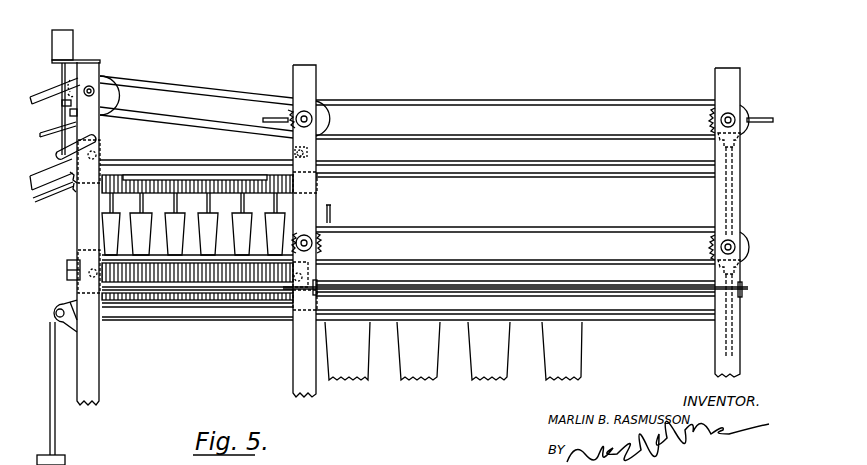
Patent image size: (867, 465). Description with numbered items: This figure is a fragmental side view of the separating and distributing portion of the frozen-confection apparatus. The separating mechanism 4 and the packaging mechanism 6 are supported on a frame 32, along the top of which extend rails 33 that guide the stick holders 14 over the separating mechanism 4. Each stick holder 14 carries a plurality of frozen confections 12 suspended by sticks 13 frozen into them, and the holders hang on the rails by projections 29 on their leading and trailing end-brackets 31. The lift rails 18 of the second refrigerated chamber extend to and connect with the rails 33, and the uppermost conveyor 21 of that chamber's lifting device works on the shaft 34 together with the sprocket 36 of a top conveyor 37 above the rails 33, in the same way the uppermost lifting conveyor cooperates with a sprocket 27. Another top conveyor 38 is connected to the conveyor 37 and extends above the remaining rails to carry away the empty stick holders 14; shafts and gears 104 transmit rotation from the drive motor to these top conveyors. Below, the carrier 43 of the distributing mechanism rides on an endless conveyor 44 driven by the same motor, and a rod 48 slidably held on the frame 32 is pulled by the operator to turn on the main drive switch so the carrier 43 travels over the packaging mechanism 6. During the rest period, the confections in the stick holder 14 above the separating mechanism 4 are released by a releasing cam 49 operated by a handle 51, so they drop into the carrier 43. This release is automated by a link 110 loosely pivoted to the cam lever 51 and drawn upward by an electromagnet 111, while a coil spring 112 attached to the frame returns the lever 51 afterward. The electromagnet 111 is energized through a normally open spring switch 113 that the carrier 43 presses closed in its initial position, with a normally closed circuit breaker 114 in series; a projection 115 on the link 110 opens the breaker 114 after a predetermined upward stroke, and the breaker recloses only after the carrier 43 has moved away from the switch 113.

The separating mechanism 4 is at (237, 81).
The packaging mechanism 6 is at (583, 92).
The frozen confections 12 is at (143, 253).
The sticks 13 is at (173, 203).
The stick holders 14 is at (186, 188).
The lift rails 18 is at (48, 176).
The uppermost conveyor 21 is at (46, 98).
The sprocket 27 is at (66, 84).
The projections 29 is at (308, 152).
The end-brackets 31 is at (290, 158).
The frame 32 is at (95, 378).
The rails 33 is at (484, 174).
The shaft 34 is at (90, 85).
The sprocket 36 is at (284, 112).
The top conveyor 37 is at (172, 82).
The top conveyor 38 is at (472, 100).
The carrier 43 is at (200, 300).
The endless conveyor 44 is at (433, 227).
The rod 48 is at (645, 290).
The releasing cam 49 is at (105, 133).
The handle 51 is at (70, 184).
The shafts and gears 104 is at (735, 198).
The link 110 is at (62, 104).
The electromagnet 111 is at (62, 30).
The coil spring 112 is at (72, 190).
The spring switch 113 is at (68, 264).
The circuit breaker 114 is at (70, 114).
The projection 115 is at (50, 135).